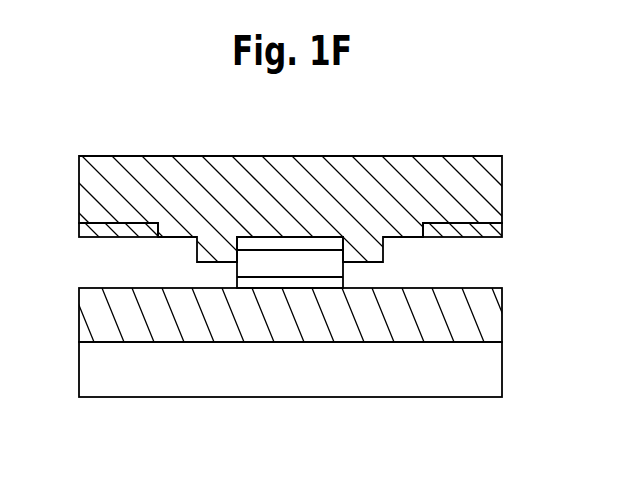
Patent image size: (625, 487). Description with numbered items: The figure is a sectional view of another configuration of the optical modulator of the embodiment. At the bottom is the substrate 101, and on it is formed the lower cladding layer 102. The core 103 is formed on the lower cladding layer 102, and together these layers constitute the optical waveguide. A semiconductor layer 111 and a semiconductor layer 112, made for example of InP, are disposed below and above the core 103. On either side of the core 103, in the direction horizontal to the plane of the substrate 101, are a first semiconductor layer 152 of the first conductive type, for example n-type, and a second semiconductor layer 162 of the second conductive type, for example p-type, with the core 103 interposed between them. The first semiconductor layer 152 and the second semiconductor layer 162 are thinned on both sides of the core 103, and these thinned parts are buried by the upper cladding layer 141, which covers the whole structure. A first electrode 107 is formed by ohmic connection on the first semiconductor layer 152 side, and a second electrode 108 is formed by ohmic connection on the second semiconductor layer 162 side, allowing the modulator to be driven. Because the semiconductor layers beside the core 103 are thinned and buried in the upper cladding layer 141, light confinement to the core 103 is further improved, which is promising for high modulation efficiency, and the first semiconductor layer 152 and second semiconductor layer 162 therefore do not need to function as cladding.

The substrate 101 is at (503, 369).
The lower cladding layer 102 is at (503, 316).
The core 103 is at (290, 257).
The first electrode 107 is at (77, 230).
The second electrode 108 is at (503, 228).
The semiconductor layer 111 is at (243, 282).
The semiconductor layer 112 is at (330, 245).
The upper cladding layer 141 is at (503, 190).
The first semiconductor layer 152 is at (77, 263).
The second semiconductor layer 162 is at (503, 262).